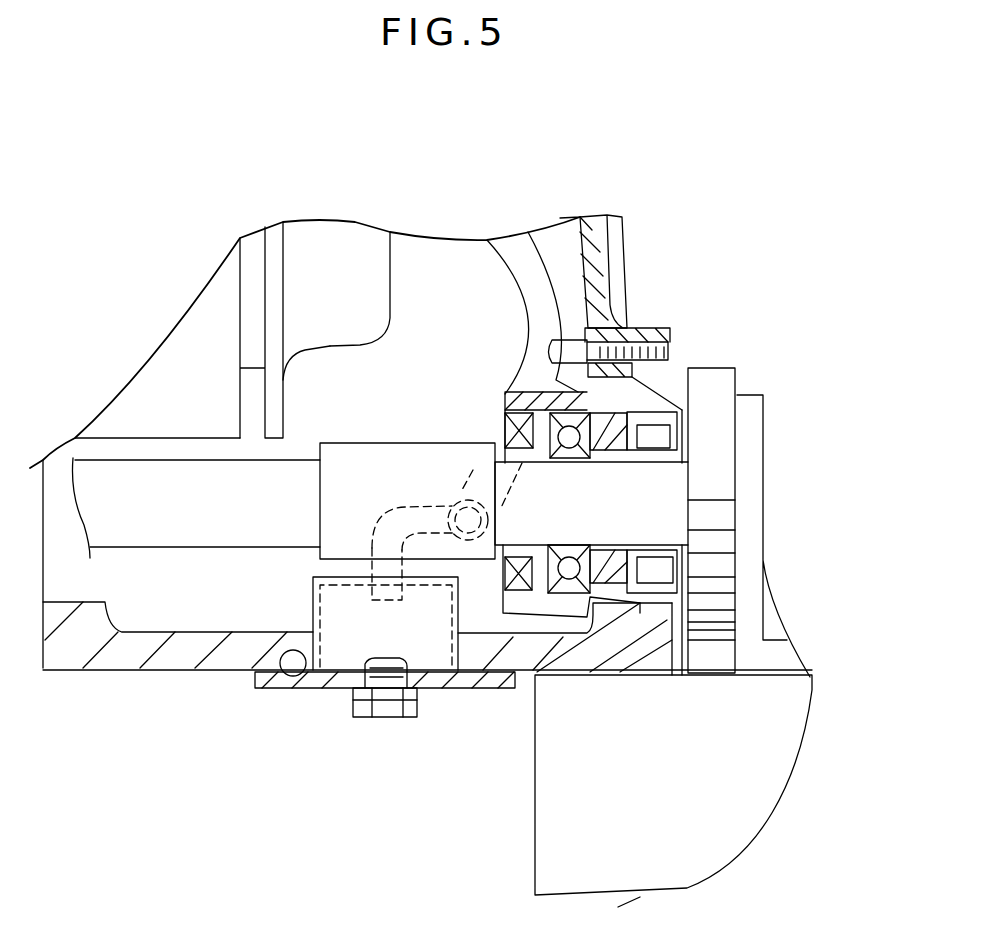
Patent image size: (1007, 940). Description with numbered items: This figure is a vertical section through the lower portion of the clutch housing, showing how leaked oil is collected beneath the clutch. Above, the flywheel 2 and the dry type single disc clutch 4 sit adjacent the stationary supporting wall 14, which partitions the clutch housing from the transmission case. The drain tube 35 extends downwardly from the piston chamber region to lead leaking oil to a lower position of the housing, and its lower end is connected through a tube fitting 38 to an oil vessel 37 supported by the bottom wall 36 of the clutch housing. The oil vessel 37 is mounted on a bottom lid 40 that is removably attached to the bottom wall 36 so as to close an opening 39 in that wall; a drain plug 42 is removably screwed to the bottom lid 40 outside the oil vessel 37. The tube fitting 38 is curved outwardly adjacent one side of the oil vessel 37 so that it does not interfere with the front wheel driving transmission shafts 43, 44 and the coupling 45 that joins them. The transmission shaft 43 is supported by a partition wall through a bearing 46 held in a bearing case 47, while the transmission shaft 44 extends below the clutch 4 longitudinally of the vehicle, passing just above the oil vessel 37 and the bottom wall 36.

The flywheel 2 is at (195, 325).
The dry type single disc clutch 4 is at (352, 235).
The stationary supporting wall 14 is at (592, 250).
The drain tube 35 is at (523, 275).
The bottom wall 36 is at (183, 657).
The oil vessel 37 is at (327, 606).
The tube fitting 38 is at (388, 512).
The opening 39 is at (293, 683).
The bottom lid 40 is at (462, 683).
The drain plug 42 is at (387, 718).
The front wheel driving transmission shaft 43 is at (637, 505).
The front wheel driving transmission shaft 44 is at (200, 530).
The coupling 45 is at (443, 450).
The bearing 46 is at (652, 428).
The bearing case 47 is at (632, 322).